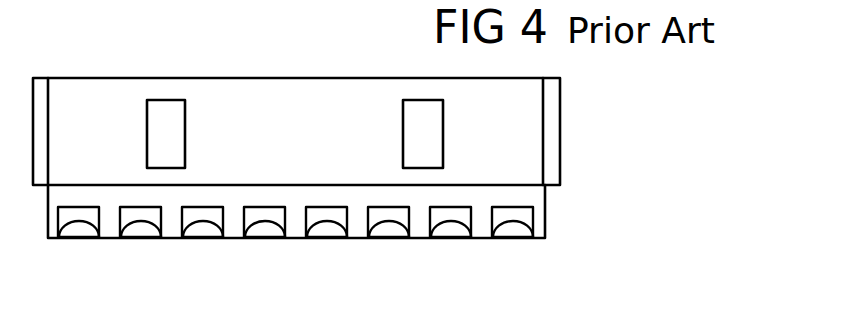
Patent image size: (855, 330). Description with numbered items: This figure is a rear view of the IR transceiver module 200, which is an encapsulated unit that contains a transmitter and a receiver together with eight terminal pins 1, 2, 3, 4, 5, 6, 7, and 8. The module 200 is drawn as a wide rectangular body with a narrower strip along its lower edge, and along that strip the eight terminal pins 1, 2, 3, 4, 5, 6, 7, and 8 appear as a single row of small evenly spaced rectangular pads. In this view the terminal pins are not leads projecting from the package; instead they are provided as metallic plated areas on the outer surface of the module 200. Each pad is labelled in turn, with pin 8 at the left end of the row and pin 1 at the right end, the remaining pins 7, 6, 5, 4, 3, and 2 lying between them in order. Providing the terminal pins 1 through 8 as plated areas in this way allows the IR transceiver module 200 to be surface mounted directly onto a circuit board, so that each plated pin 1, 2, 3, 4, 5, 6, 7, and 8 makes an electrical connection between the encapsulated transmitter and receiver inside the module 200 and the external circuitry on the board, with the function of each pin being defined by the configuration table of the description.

The IR transceiver module 200 is at (296, 149).
The terminal pin 1 is at (511, 232).
The terminal pin 2 is at (448, 232).
The terminal pin 3 is at (387, 232).
The terminal pin 4 is at (324, 232).
The terminal pin 5 is at (264, 232).
The terminal pin 6 is at (202, 232).
The terminal pin 7 is at (141, 232).
The terminal pin 8 is at (80, 232).